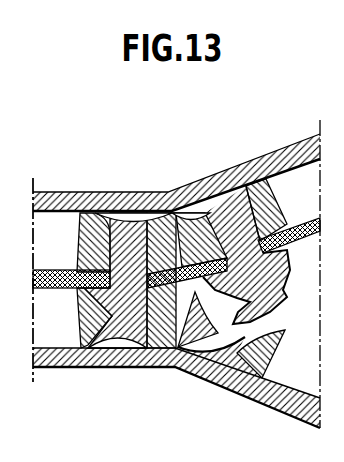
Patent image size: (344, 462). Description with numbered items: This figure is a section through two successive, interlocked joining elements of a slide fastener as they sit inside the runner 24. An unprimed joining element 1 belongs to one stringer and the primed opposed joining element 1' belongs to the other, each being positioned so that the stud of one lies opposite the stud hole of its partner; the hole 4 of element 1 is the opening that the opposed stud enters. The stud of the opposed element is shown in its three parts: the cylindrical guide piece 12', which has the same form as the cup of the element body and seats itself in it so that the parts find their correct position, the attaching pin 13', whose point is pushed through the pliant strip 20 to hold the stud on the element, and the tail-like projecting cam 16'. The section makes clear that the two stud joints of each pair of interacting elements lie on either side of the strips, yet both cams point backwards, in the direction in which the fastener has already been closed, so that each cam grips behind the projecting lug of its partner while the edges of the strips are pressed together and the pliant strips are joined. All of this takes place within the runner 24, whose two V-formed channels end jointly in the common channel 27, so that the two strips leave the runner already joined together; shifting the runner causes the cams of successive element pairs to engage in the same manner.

The joining element 1 is at (133, 369).
The opposed joining element 1' is at (152, 193).
The hole 4 is at (221, 343).
The guide piece 12' is at (216, 318).
The attaching pin 13' is at (185, 231).
The projecting cam 16' is at (185, 371).
The pliant strip 20 is at (298, 222).
The runner 24 is at (163, 192).
The common channel 27 is at (58, 233).